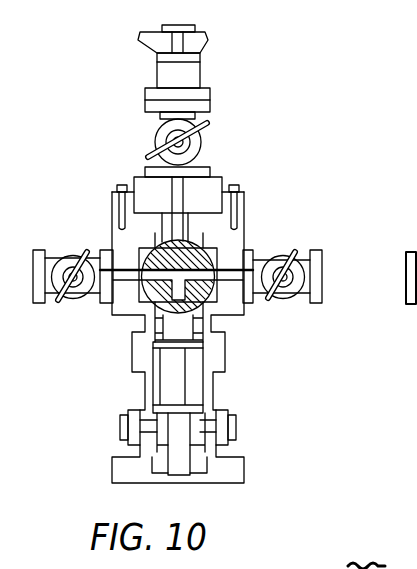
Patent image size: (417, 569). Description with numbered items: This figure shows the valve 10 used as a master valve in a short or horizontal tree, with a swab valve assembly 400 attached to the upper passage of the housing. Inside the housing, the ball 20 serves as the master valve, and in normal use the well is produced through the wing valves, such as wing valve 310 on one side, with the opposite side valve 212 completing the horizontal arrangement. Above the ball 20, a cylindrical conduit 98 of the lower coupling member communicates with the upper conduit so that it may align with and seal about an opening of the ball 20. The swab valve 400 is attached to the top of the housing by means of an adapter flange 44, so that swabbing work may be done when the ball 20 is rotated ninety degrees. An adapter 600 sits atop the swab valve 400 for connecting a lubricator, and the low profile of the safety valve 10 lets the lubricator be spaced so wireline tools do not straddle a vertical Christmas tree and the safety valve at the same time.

The valve 10 is at (260, 240).
The ball 20 is at (201, 248).
The adapter flange 44 is at (137, 226).
The cylindrical conduit 98 is at (181, 194).
The left auxiliary valve 212 is at (66, 262).
The wing valve 310 is at (288, 293).
The swab valve assembly 400 is at (198, 138).
The adapter 600 is at (209, 60).